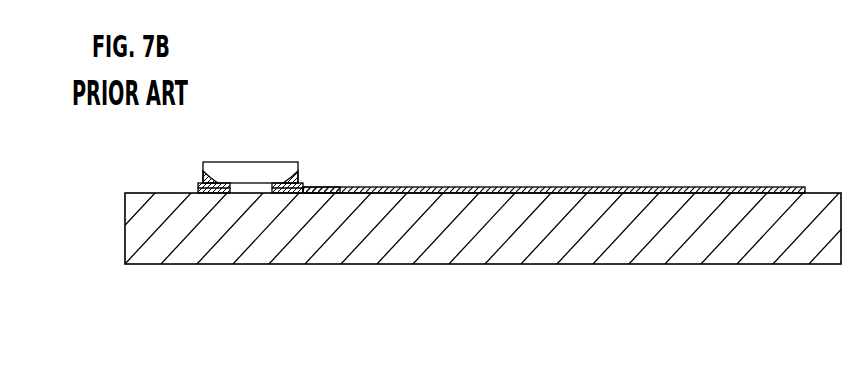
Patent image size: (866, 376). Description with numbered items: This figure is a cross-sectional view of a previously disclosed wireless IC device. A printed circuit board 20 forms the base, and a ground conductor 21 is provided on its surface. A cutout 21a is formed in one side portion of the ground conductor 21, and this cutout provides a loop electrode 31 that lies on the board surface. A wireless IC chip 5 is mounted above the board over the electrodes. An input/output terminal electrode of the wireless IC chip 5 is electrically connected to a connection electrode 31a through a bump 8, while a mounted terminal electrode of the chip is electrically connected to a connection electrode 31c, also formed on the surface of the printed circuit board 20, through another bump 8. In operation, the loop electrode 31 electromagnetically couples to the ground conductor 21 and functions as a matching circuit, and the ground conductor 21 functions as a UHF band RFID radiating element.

The wireless IC chip 5 is at (250, 162).
The bumps 8 is at (203, 174).
The printed circuit board 20 is at (510, 252).
The ground conductor 21 is at (483, 187).
The cutout 21a is at (327, 190).
The loop electrode 31 is at (279, 215).
The connection electrode 31a is at (283, 193).
The connection electrode 31c is at (211, 193).